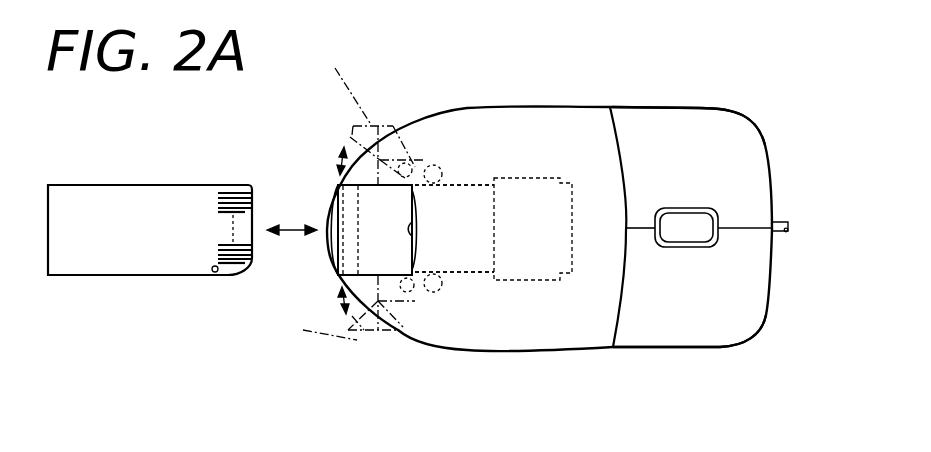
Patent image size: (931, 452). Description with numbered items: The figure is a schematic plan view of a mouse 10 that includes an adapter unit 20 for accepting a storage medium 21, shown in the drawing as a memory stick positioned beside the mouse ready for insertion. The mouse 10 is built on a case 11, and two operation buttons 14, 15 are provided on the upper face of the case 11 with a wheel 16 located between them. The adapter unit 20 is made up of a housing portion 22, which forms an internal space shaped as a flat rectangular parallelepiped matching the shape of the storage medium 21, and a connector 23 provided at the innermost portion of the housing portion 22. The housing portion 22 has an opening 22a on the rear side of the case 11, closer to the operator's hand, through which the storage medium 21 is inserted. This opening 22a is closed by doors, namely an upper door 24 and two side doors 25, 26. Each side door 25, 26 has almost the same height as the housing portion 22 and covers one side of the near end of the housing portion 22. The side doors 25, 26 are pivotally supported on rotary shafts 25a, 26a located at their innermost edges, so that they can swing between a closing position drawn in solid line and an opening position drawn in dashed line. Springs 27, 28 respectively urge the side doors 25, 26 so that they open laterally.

The mouse 10 is at (731, 107).
The case 11 is at (552, 105).
The operation button 14 is at (658, 112).
The operation button 15 is at (702, 340).
The wheel 16 is at (685, 226).
The adapter unit 20 is at (462, 183).
The storage medium 21 is at (128, 190).
The housing portion 22 is at (463, 263).
The opening 22a is at (412, 222).
The connector 23 is at (537, 263).
The upper door 24 is at (342, 218).
The side door 25 is at (355, 163).
The rotary shaft 25a is at (391, 162).
The side door 26 is at (341, 280).
The rotary shaft 26a is at (412, 275).
The spring 27 is at (369, 230).
The spring 28 is at (373, 230).